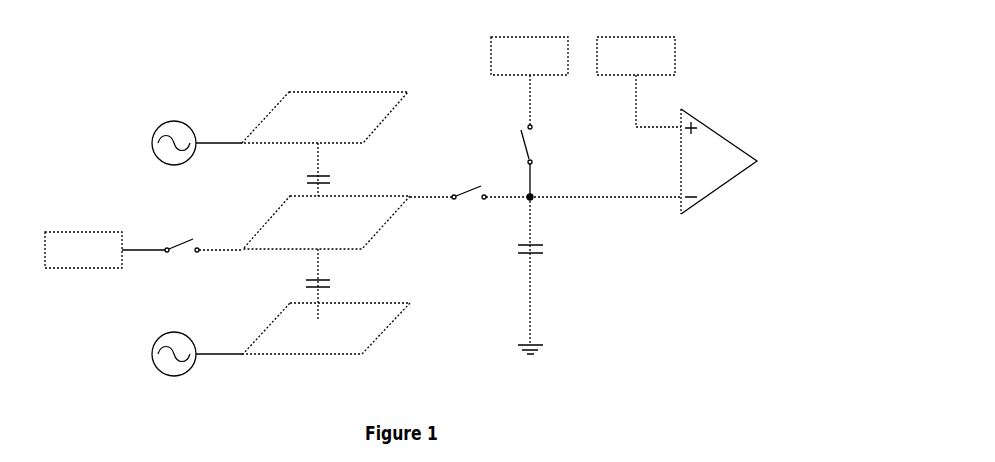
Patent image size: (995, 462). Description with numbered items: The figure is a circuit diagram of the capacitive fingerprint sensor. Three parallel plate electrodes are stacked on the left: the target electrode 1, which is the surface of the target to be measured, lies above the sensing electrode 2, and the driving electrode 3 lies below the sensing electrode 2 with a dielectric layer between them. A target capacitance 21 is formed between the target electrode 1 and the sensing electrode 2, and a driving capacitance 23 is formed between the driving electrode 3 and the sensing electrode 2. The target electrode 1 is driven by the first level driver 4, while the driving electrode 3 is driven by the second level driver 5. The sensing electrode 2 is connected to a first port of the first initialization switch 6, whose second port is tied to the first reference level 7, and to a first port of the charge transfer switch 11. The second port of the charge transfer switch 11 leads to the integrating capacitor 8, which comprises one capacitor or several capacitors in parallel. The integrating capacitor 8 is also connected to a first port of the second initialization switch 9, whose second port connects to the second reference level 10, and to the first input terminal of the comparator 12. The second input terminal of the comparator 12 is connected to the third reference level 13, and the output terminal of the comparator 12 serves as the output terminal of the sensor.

The target electrode 1 is at (272, 92).
The sensing electrode 2 is at (273, 196).
The driving electrode 3 is at (273, 302).
The first level driver 4 is at (143, 144).
The second level driver 5 is at (143, 355).
The first initialization switch 6 is at (183, 232).
The first reference level 7 is at (82, 222).
The integrating capacitor 8 is at (545, 250).
The second initialization switch 9 is at (545, 145).
The second reference level 10 is at (485, 55).
The charge transfer switch 11 is at (470, 215).
The comparator 12 is at (727, 198).
The third reference level 13 is at (683, 55).
The target capacitance 21 is at (333, 178).
The driving capacitance 23 is at (333, 285).